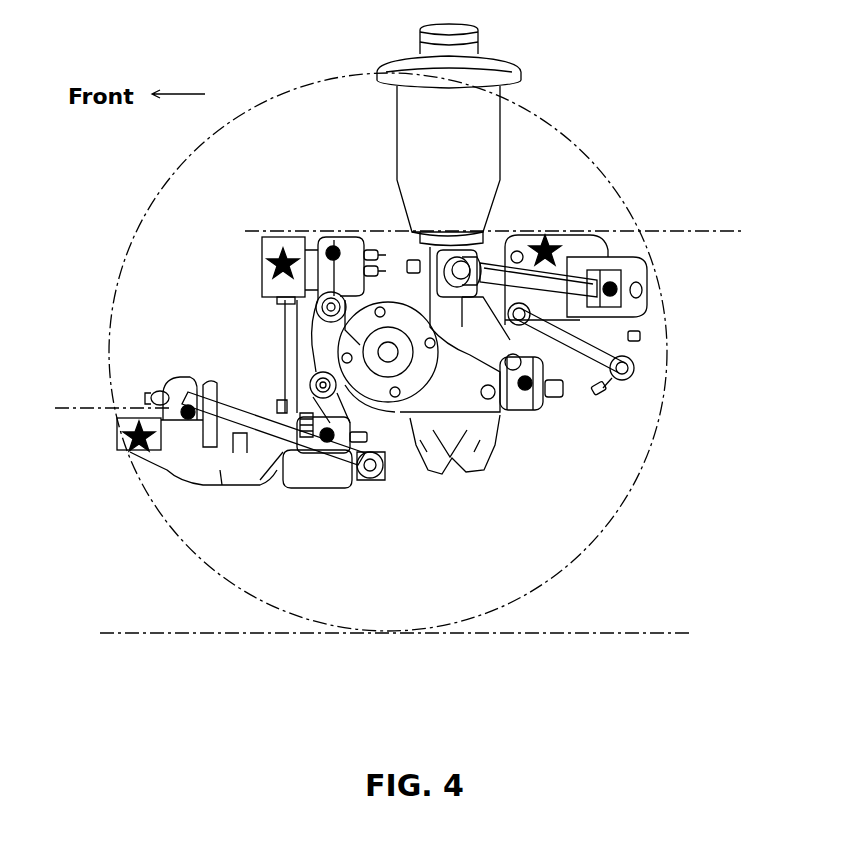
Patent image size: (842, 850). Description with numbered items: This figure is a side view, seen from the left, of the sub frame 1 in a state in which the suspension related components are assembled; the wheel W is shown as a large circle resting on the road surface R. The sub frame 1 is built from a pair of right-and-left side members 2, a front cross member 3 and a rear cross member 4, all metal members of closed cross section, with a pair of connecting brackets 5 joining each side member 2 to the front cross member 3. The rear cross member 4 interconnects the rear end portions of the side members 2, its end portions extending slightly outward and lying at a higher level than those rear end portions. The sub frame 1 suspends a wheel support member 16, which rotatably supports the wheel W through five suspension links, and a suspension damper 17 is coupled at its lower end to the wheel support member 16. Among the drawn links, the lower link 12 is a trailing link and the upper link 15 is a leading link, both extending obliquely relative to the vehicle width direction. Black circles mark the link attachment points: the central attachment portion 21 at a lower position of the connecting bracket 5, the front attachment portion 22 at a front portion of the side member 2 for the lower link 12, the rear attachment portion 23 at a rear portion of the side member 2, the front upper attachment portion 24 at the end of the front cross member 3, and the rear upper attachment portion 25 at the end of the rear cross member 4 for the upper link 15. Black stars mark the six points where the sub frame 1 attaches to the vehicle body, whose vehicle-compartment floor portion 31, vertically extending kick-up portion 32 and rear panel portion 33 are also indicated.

The sub frame 1 is at (653, 81).
The side member 2 is at (220, 470).
The front cross member 3 is at (272, 275).
The rear cross member 4 is at (585, 245).
The connecting bracket 5 is at (297, 347).
The lower link 12 is at (272, 473).
The upper link 15 is at (512, 282).
The wheel support member 16 is at (418, 382).
The suspension damper 17 is at (490, 120).
The central attachment portion 21 is at (325, 450).
The front attachment portion 22 is at (183, 398).
The rear attachment portion 23 is at (527, 397).
The front upper attachment portion 24 is at (331, 246).
The rear upper attachment portion 25 is at (632, 262).
The vehicle-compartment floor portion 31 is at (72, 408).
The kick-up portion 32 is at (210, 298).
The rear panel portion 33 is at (718, 231).
The wheel W is at (656, 441).
The road surface R is at (135, 633).